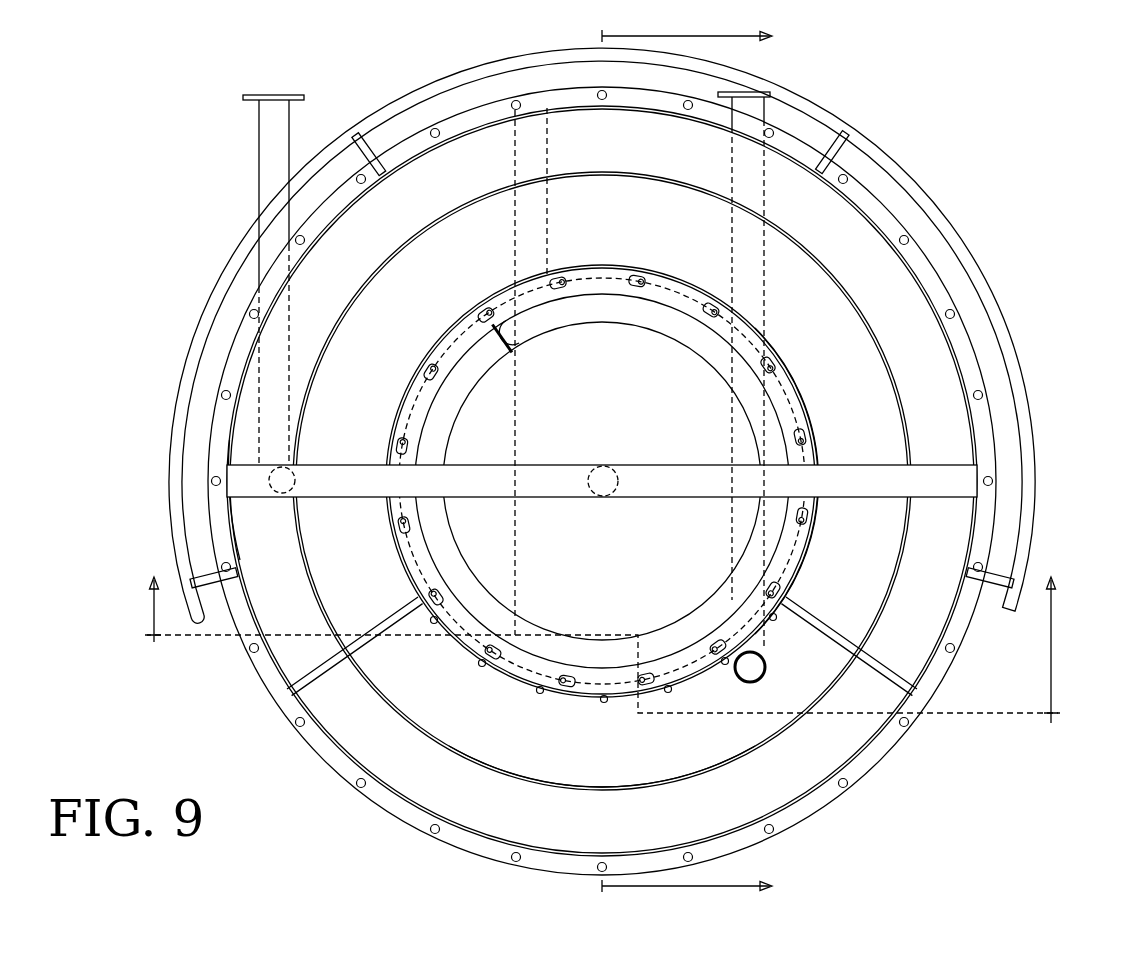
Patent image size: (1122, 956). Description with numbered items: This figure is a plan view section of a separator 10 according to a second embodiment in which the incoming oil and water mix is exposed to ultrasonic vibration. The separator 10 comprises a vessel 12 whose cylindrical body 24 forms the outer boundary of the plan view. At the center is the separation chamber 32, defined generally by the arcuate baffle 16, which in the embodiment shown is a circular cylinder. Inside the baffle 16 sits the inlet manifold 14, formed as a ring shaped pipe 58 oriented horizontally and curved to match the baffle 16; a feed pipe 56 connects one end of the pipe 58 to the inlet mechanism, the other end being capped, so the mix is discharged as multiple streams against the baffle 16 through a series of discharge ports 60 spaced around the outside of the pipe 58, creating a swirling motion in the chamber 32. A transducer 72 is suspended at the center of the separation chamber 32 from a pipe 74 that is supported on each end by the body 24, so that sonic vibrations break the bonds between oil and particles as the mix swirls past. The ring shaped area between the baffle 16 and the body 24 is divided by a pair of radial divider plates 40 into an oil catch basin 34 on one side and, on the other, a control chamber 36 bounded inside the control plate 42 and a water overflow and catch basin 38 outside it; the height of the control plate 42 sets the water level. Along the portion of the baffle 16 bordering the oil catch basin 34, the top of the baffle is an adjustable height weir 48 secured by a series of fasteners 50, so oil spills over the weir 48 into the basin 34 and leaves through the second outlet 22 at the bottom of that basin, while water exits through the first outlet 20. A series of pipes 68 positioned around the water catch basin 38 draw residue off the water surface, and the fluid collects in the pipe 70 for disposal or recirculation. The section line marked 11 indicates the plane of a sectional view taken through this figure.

The separator 10 is at (108, 190).
The section line 11- 11 is at (603, 648).
The vessel 12 is at (893, 780).
The inlet manifold 14 is at (652, 335).
The arcuate baffle 16 is at (414, 600).
The first outlet 20 is at (296, 480).
The second outlet 22 is at (766, 668).
The cylindrical body 24 is at (611, 107).
The separation chamber 32 is at (565, 407).
The oil catch basin 34 is at (513, 770).
The control chamber 36 is at (850, 412).
The water overflow and catch basin 38 is at (277, 582).
The divider plates 40 is at (345, 651).
The control plate 42 is at (853, 292).
The adjustable height weir 48 is at (455, 648).
The fasteners 50 is at (520, 692).
The feed pipe 56 is at (518, 244).
The ring shaped pipe 58 is at (481, 578).
The discharge ports 60 is at (634, 275).
The pipes 68 is at (368, 140).
The pipe 70 is at (171, 460).
The transducer 72 is at (601, 466).
The pipe 74 is at (681, 466).